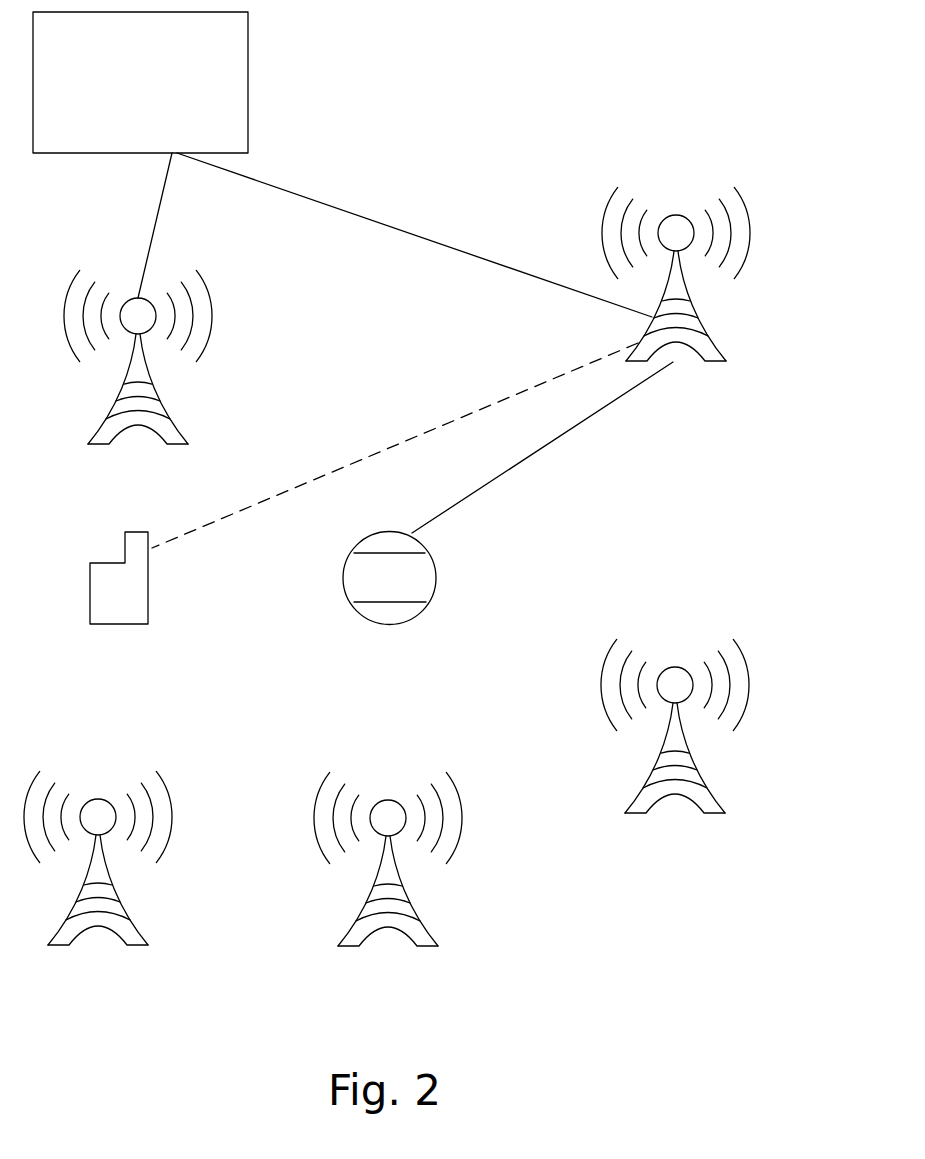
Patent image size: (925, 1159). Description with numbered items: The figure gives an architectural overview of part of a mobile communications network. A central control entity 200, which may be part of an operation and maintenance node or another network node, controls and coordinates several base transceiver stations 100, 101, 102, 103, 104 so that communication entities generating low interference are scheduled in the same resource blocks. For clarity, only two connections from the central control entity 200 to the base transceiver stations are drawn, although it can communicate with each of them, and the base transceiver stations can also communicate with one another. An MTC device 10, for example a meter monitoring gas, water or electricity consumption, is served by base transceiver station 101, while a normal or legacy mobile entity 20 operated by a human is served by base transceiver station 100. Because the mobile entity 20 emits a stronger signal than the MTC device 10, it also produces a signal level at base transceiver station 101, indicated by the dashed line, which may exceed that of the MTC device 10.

The central control entity 200 is at (248, 82).
The base transceiver station 100 is at (165, 410).
The base transceiver station 101 is at (703, 323).
The base transceiver station 102 is at (127, 907).
The base transceiver station 103 is at (417, 912).
The base transceiver station 104 is at (705, 778).
The mobile entity 20 is at (148, 590).
The MTC device 10 is at (436, 578).